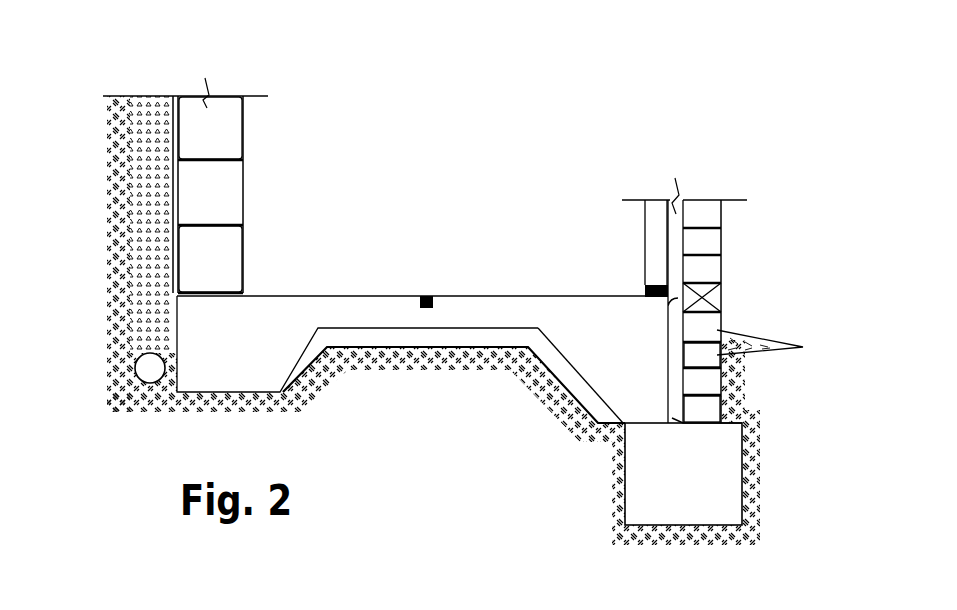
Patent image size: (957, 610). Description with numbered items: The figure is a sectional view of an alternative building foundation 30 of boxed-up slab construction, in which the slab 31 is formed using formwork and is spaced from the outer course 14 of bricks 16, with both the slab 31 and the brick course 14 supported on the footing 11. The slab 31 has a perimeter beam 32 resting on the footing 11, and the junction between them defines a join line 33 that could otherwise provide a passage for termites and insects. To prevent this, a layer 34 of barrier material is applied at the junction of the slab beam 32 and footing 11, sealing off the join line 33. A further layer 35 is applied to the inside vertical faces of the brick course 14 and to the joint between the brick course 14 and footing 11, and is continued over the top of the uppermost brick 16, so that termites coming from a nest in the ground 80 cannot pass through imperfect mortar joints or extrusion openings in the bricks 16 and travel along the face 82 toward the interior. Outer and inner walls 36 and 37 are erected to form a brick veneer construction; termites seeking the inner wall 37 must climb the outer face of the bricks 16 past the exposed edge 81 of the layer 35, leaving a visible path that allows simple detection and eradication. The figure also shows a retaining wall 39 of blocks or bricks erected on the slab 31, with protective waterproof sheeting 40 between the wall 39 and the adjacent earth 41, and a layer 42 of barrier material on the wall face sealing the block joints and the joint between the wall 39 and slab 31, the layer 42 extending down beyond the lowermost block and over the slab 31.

The footing 11 is at (683, 517).
The outer course of bricks 14 is at (782, 308).
The bricks 16 is at (778, 346).
The building foundation 30 is at (474, 185).
The slab 31 is at (530, 270).
The perimeter beam 32 is at (616, 395).
The join line 33 is at (643, 425).
The layer 34 is at (685, 424).
The further layer 35 is at (683, 362).
The outer wall 36 is at (741, 176).
The inner wall 37 is at (645, 181).
The retaining wall 39 is at (276, 189).
The protective water proof sheeting 40 is at (173, 118).
The earth 41 is at (160, 230).
The layer of barrier material 42 is at (180, 258).
The ground 80 is at (775, 424).
The exposed edge 81 is at (723, 308).
The face 82 is at (667, 350).